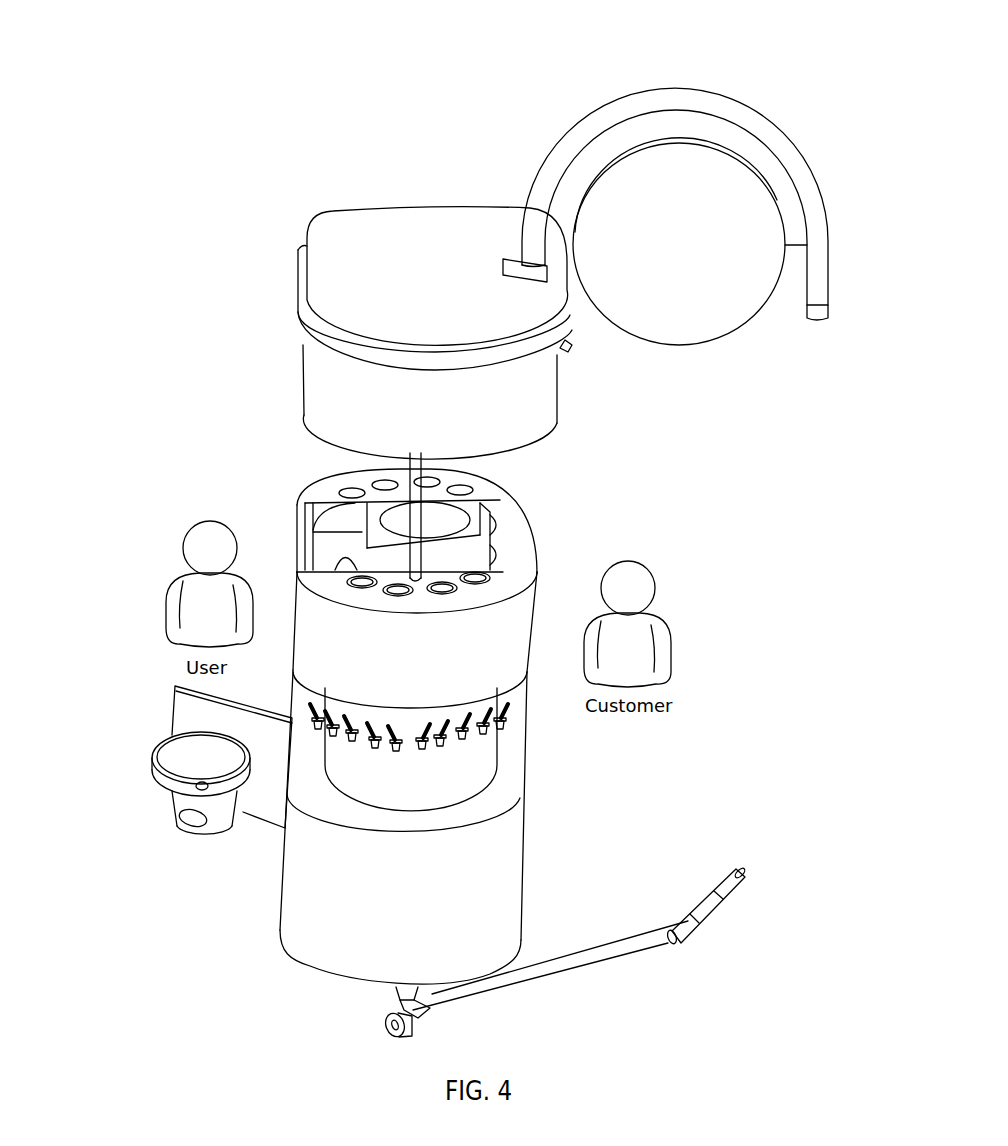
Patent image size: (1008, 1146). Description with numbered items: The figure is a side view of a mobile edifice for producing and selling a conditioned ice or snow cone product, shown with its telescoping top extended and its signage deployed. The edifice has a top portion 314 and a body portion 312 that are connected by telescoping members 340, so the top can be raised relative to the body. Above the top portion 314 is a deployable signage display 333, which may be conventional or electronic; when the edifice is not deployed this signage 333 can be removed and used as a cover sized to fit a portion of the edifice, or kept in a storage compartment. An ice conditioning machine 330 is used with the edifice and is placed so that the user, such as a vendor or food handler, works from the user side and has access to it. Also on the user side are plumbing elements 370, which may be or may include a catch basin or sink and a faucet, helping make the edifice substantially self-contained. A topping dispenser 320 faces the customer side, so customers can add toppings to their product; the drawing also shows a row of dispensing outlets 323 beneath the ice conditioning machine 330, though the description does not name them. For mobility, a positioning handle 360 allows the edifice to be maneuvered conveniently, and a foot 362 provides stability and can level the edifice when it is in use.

The body portion 312 is at (487, 862).
The top portion 314 is at (503, 403).
The topping dispenser 320 is at (436, 790).
The nozzles 323 is at (505, 715).
The ice conditioning machine 330 is at (447, 526).
The deployable signage display 333 is at (657, 188).
The telescoping members 340 is at (405, 470).
The positioning handle 360 is at (588, 962).
The foot 362 is at (290, 952).
The plumbing elements 370 is at (212, 775).